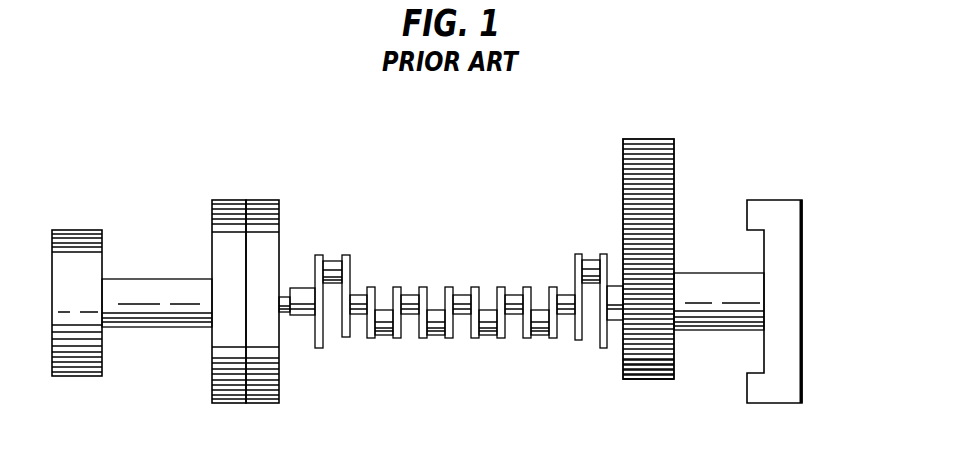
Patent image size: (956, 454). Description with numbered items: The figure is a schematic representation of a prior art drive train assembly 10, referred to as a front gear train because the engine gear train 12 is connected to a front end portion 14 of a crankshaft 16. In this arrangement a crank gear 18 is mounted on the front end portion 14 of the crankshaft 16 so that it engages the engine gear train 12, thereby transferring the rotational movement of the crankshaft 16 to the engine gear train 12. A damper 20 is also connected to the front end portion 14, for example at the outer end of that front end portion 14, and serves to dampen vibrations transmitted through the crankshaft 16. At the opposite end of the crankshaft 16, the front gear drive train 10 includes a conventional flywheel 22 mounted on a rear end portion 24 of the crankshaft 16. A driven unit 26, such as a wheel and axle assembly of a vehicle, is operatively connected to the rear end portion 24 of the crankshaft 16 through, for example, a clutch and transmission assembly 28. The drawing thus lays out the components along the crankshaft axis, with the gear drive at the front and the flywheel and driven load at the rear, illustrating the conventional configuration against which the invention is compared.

The drive train assembly 10 is at (472, 138).
The engine gear train 12 is at (651, 139).
The front end portion 14 is at (723, 212).
The crankshaft 16 is at (408, 293).
The crank gear 18 is at (643, 380).
The damper 20 is at (790, 264).
The flywheel 22 is at (268, 207).
The rear end portion 24 is at (298, 340).
The driven unit 26 is at (76, 243).
The clutch and transmission assembly 28 is at (231, 207).